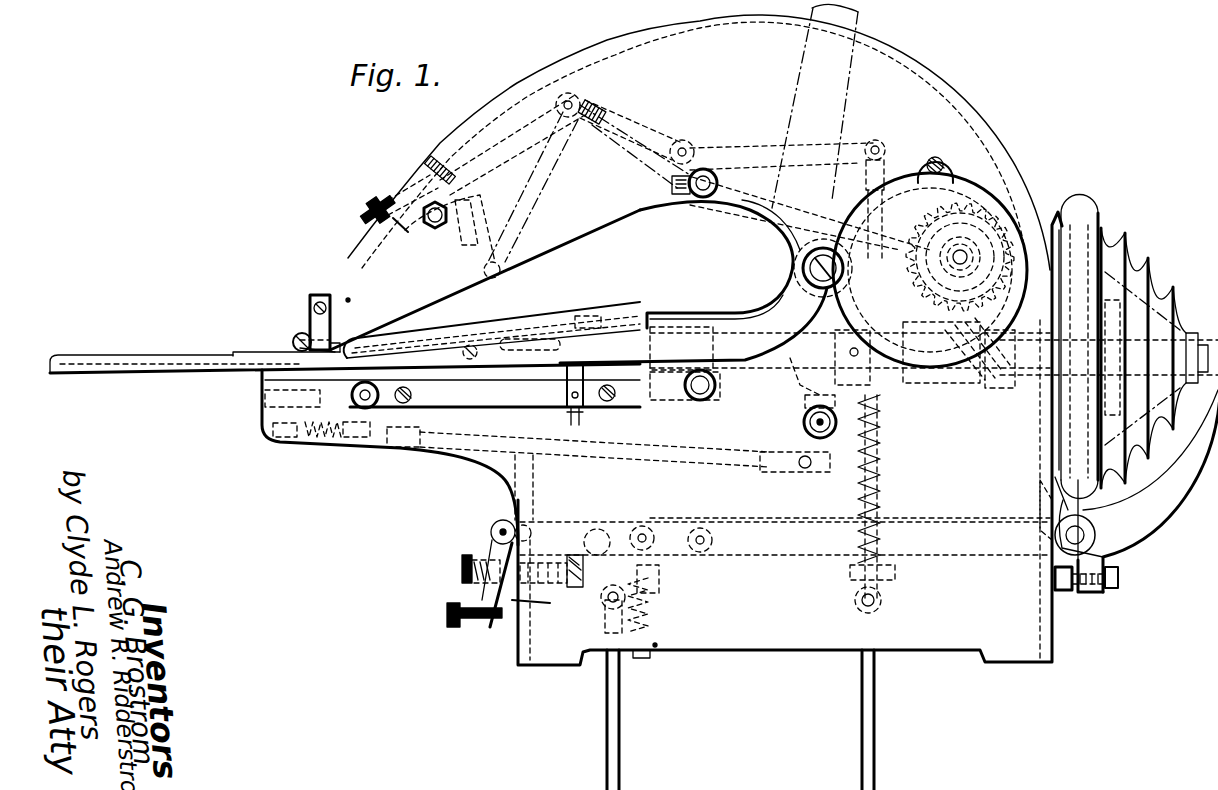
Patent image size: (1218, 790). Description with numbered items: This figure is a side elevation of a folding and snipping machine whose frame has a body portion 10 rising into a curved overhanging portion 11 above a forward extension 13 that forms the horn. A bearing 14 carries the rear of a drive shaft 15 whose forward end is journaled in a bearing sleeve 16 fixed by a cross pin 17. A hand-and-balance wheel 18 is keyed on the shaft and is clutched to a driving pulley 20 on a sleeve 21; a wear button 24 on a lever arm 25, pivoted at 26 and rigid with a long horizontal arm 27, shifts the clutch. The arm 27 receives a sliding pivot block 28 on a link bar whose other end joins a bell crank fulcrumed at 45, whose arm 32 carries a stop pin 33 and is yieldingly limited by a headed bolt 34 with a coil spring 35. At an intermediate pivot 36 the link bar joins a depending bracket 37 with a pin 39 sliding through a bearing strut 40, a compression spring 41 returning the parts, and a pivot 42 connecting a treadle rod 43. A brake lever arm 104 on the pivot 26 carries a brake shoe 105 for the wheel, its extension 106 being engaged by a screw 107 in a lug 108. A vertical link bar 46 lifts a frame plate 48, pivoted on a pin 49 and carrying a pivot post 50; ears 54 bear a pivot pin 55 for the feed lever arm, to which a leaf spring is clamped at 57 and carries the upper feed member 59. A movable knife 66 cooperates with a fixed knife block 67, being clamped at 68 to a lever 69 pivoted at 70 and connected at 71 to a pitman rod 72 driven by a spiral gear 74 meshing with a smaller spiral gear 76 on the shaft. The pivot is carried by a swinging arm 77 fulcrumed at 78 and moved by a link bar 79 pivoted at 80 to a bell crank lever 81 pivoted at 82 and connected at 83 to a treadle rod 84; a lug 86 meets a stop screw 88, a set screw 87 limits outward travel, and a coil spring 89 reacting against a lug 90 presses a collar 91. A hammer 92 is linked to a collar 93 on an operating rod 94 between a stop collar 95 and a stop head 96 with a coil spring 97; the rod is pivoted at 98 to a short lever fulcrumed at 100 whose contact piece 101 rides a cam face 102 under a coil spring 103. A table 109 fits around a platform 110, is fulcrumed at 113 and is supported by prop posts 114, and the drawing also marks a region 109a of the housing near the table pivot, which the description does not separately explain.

The body portion 10 is at (520, 661).
The curved overhanging portion 11 is at (634, 44).
The extension 13 is at (262, 416).
The bearing 14 is at (996, 360).
The drive shaft 15 is at (795, 364).
The bearing bracket or sleeve 16 is at (690, 328).
The cross pin or rod 17 is at (710, 387).
The hand-and-balance wheel 18 is at (1098, 210).
The driving pulley 20 is at (1122, 240).
The sleeve 21 is at (1184, 320).
The wear button 24 is at (1196, 368).
The lever arm 25 is at (1175, 485).
The pivot 26 is at (1090, 534).
The horizontally extending arm 27 is at (802, 521).
The pivot block 28 is at (702, 530).
The bell crank lever arm 32 is at (480, 596).
The adjustable stop pin 33 is at (497, 629).
The adjustable headed bolt 34 is at (535, 590).
The coil spring 35 is at (485, 560).
The pivot connection 36 is at (648, 530).
The depending bracket 37 is at (661, 575).
The depending pin 39 is at (642, 659).
The bearing strut 40 is at (656, 648).
The compression coil spring 41 is at (655, 616).
The pivot connection 42 is at (604, 606).
The depending rod 43 is at (620, 709).
The fulcrum 45 is at (500, 520).
The link bar 46 is at (538, 485).
The frame plate 48 is at (482, 398).
The pivot pin 49 is at (352, 398).
The pivot post 50 is at (410, 335).
The wing extensions or ears 54 is at (530, 342).
The transverse pivot pin 55 is at (478, 343).
The clamp 57 is at (590, 318).
The upper feed member 59 is at (297, 336).
The movable knife 66 is at (318, 300).
The fixed knife block 67 is at (355, 340).
The slot and clamp screw 68 is at (312, 306).
The lever 69 is at (347, 298).
The pivot 70 is at (500, 270).
The pivot 71 is at (575, 101).
The pitman rod 72 is at (643, 135).
The spiral gear 74 is at (1030, 210).
The spiral gear 76 is at (980, 385).
The swinging arm 77 is at (472, 236).
The pivot pin 78 is at (430, 206).
The link bar 79 is at (578, 198).
The pivot 80 is at (686, 143).
The bell crank lever 81 is at (740, 152).
The pivot 82 is at (705, 197).
The pivot 83 is at (884, 150).
The treadle rod 84 is at (885, 496).
The lug 86 is at (468, 188).
The adjustable set screw 87 is at (378, 198).
The stop screw 88 is at (438, 160).
The coil spring 89 is at (882, 469).
The lug 90 is at (895, 577).
The collar 91 is at (895, 396).
The hammer 92 is at (297, 350).
The collar 93 is at (362, 439).
The operating rod 94 is at (610, 452).
The stop collar 95 is at (412, 449).
The stop head 96 is at (290, 439).
The coil spring 97 is at (318, 440).
The pivot 98 is at (812, 471).
The fulcrum 100 is at (812, 423).
The contact piece 101 is at (832, 338).
The cam face 102 is at (848, 353).
The coil spring 103 is at (806, 403).
The brake lever arm 104 is at (1045, 510).
The brake shoe 105 is at (1050, 492).
The downward extension 106 is at (1060, 593).
The screw 107 is at (1120, 576).
The lug 108 is at (1095, 593).
The table 109 is at (123, 357).
The slot 109a is at (852, 15).
The platform 110 is at (244, 352).
The fulcrum 113 is at (803, 269).
The prop posts 114 is at (592, 406).